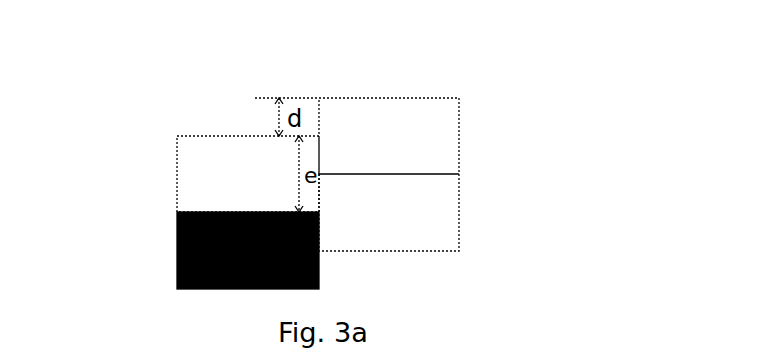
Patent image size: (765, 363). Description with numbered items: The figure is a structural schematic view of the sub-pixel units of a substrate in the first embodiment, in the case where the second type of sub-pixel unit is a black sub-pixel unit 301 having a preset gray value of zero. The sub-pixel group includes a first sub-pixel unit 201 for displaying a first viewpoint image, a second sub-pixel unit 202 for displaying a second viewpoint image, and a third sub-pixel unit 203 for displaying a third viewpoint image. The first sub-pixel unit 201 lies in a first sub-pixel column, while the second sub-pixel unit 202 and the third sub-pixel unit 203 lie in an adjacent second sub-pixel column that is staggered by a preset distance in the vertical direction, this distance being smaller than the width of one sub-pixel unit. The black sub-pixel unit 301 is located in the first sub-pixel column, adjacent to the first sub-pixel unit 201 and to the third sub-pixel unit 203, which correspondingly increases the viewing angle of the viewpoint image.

The first sub-pixel unit 201 is at (176, 185).
The black sub-pixel unit 301 is at (176, 253).
The second sub-pixel unit 202 is at (462, 135).
The third sub-pixel unit 203 is at (462, 214).